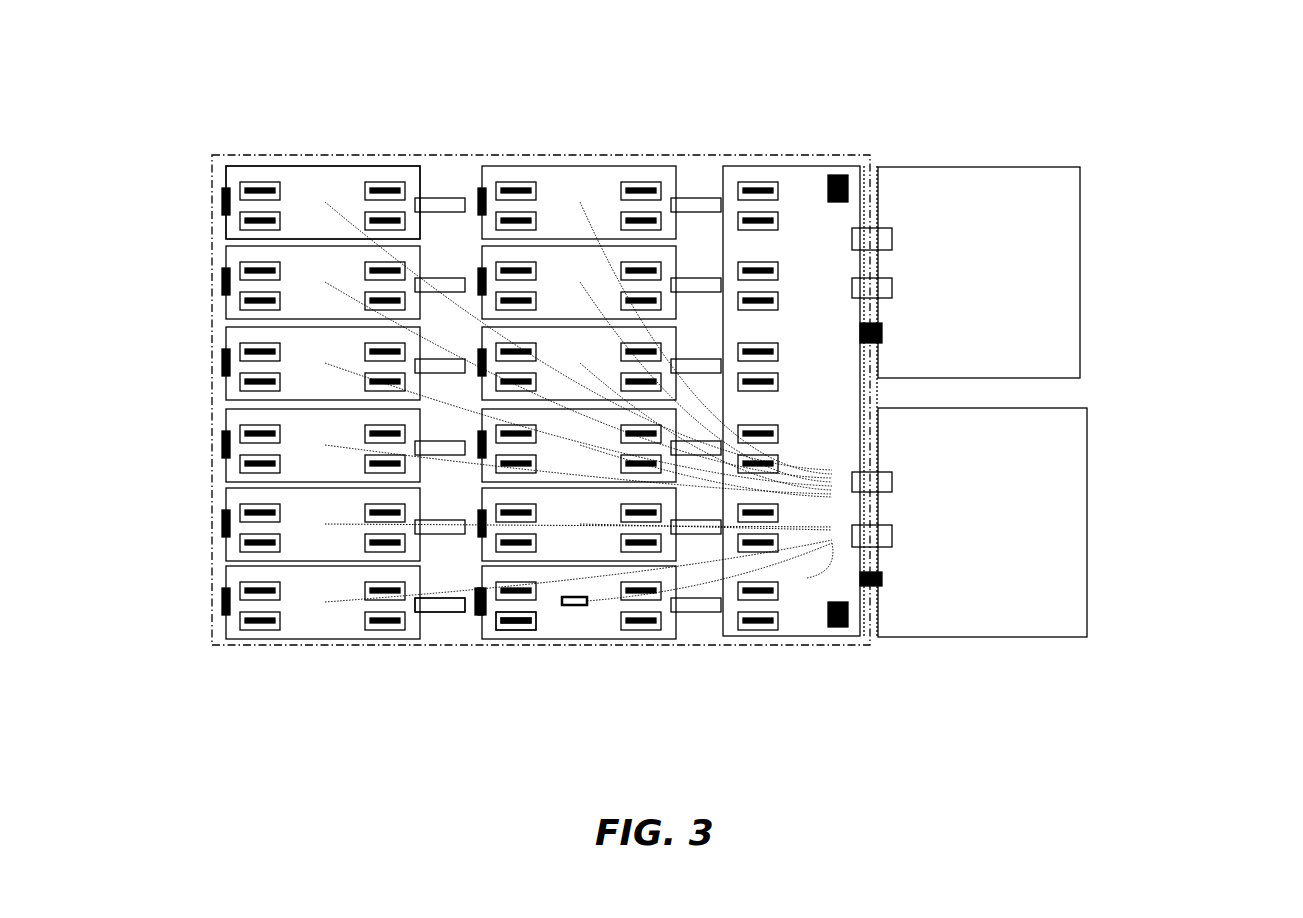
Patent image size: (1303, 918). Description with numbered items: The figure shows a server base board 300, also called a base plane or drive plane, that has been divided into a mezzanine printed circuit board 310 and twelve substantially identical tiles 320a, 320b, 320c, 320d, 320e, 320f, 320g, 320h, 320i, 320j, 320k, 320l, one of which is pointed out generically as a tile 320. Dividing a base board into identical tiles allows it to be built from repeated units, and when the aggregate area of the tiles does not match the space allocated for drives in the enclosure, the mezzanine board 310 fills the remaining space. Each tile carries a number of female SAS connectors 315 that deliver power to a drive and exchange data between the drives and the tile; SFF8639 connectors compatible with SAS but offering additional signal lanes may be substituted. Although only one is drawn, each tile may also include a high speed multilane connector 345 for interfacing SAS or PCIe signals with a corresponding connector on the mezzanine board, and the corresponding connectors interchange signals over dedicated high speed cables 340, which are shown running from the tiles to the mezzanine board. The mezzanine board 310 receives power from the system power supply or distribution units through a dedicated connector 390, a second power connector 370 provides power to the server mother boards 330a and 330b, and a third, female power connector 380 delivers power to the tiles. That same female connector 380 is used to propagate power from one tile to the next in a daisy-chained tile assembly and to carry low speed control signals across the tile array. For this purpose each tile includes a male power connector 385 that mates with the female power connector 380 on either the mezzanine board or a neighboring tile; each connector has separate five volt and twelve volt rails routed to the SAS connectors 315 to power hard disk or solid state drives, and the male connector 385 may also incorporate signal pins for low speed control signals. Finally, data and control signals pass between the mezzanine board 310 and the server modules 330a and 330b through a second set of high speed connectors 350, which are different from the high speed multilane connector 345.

The base board 300 is at (457, 172).
The mezzanine printed circuit board 310 is at (800, 178).
The tile 320 is at (310, 163).
The tile 320a is at (305, 628).
The tile 320b is at (233, 550).
The tile 320c is at (237, 478).
The tile 320d is at (237, 340).
The tile 320e is at (233, 258).
The tile 320f is at (240, 170).
The tile 320g is at (587, 623).
The tile 320h is at (490, 497).
The tile 320i is at (492, 460).
The tile 320j is at (548, 350).
The tile 320k is at (565, 268).
The tile 320l is at (662, 178).
The female SAS connector 315 is at (508, 622).
The server mother board 330a is at (1069, 220).
The server mother board 330b is at (1082, 457).
The high speed cable 340 is at (812, 577).
The high speed multilane connector 345 is at (575, 608).
The high speed connector 350 is at (887, 482).
The second power connector 370 is at (875, 587).
The third power connector 380 is at (475, 613).
The male power connector 385 is at (435, 608).
The dedicated connector 390 is at (847, 622).